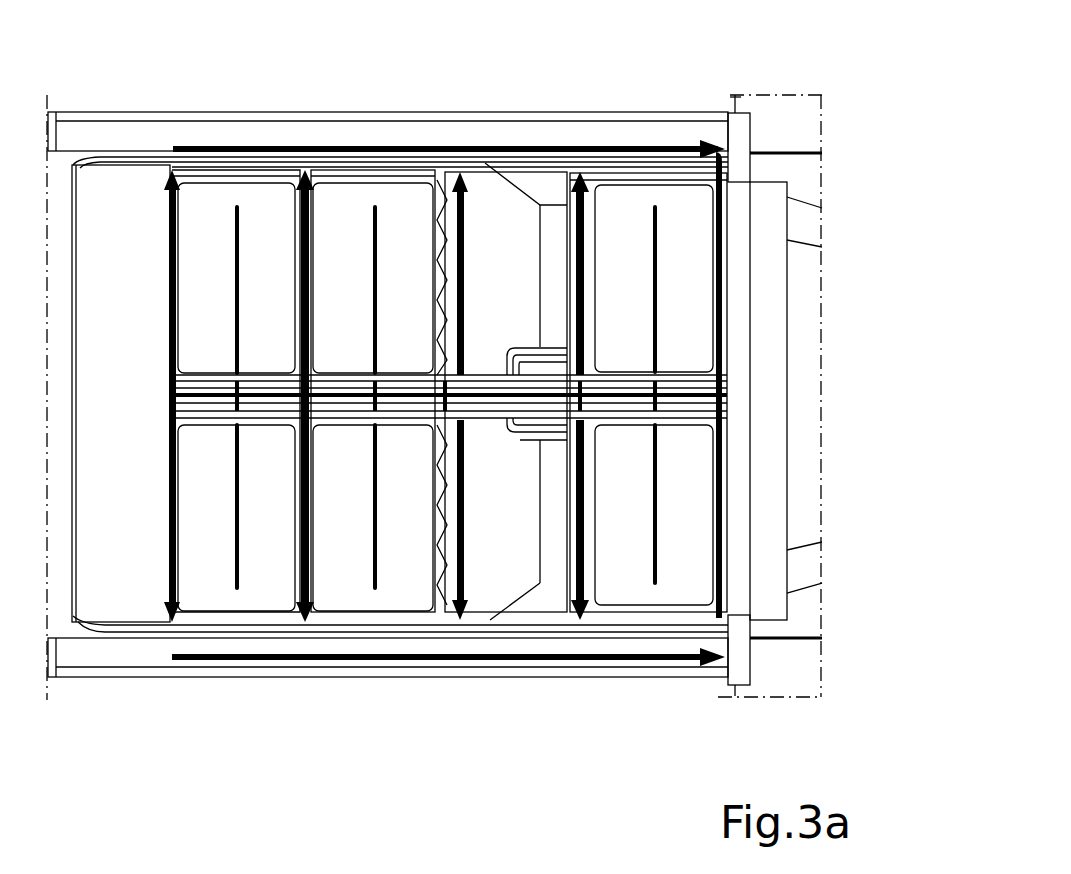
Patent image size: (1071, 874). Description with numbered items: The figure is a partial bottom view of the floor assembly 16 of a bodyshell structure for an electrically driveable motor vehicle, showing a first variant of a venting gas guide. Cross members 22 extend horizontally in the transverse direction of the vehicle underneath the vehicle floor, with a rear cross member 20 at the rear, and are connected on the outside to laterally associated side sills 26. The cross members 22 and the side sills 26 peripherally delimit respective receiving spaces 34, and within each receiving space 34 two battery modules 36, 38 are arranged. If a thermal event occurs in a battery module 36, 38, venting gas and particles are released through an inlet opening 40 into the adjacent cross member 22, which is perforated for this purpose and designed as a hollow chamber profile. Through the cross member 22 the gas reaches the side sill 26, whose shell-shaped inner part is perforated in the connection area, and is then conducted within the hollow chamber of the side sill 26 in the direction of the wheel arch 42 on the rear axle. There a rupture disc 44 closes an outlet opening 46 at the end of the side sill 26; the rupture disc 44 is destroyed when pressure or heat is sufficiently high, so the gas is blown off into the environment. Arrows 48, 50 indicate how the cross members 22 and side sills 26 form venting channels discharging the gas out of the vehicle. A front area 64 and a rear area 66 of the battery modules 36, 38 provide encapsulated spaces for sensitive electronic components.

The floor assembly 16 is at (643, 86).
The rear cross member 20 is at (572, 475).
The cross member 22 is at (297, 540).
The side sill 26 is at (515, 115).
The receiving space 34 is at (260, 200).
The battery module 36 is at (226, 283).
The battery module 38 is at (226, 478).
The inlet opening 40 is at (437, 352).
The wheel arch 42 is at (788, 84).
The rupture disc 44 is at (738, 142).
The outlet opening 46 is at (772, 156).
The arrow 48 is at (297, 318).
The arrow 50 is at (676, 143).
The front area 64 is at (116, 186).
The rear area 66 is at (768, 306).